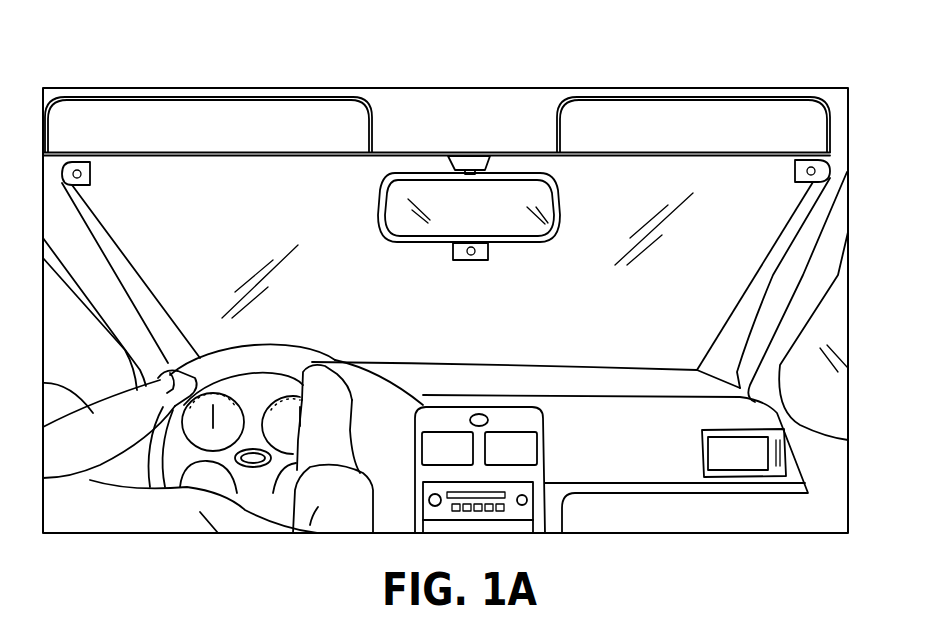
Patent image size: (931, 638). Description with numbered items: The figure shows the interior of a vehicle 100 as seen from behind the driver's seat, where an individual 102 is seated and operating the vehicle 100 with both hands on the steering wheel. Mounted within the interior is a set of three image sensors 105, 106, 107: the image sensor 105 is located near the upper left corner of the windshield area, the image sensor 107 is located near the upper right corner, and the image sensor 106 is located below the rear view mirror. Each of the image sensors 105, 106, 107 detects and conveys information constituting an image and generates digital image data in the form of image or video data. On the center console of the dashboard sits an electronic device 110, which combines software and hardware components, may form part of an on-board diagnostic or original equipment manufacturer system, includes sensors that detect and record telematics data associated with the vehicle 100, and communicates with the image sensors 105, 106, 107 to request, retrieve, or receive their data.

The vehicle 100 is at (520, 54).
The individual 102 is at (106, 518).
The image sensor 105 is at (89, 171).
The image sensor 106 is at (472, 260).
The image sensor 107 is at (795, 172).
The electronic device 110 is at (511, 418).